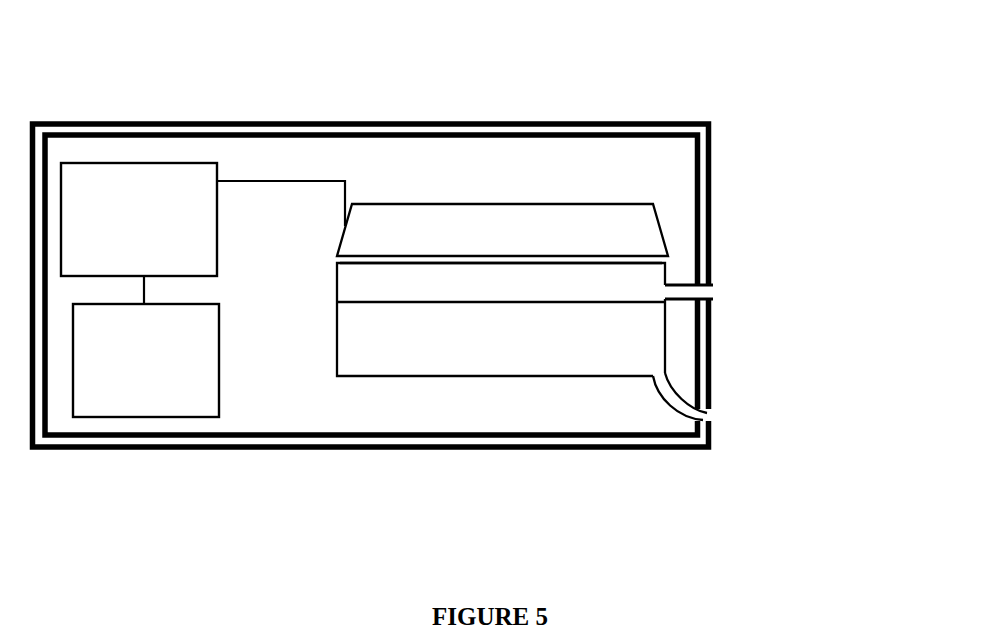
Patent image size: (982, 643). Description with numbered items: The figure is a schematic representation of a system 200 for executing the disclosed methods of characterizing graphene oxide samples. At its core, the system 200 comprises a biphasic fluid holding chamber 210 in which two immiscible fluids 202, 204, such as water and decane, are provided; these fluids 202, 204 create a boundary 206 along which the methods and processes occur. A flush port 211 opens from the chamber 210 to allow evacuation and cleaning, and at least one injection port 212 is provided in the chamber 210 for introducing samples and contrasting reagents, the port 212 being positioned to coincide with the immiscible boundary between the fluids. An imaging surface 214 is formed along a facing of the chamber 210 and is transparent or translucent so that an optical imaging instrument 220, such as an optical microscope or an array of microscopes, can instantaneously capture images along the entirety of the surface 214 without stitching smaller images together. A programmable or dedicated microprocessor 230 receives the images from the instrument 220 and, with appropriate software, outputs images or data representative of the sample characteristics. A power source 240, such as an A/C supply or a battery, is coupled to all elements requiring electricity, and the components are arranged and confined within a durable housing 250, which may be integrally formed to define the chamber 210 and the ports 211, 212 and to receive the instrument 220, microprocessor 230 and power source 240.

The system 200 is at (285, 70).
The immiscible fluid 202 is at (484, 354).
The immiscible fluid 204 is at (484, 297).
The boundary 206 is at (587, 303).
The biphasic fluid holding chamber 210 is at (587, 377).
The flush port 211 is at (715, 414).
The injection port 212 is at (713, 292).
The imaging surface 214 is at (608, 267).
The optical imaging instrument 220 is at (490, 243).
The microprocessor 230 is at (122, 226).
The power source 240 is at (130, 367).
The housing 250 is at (263, 440).